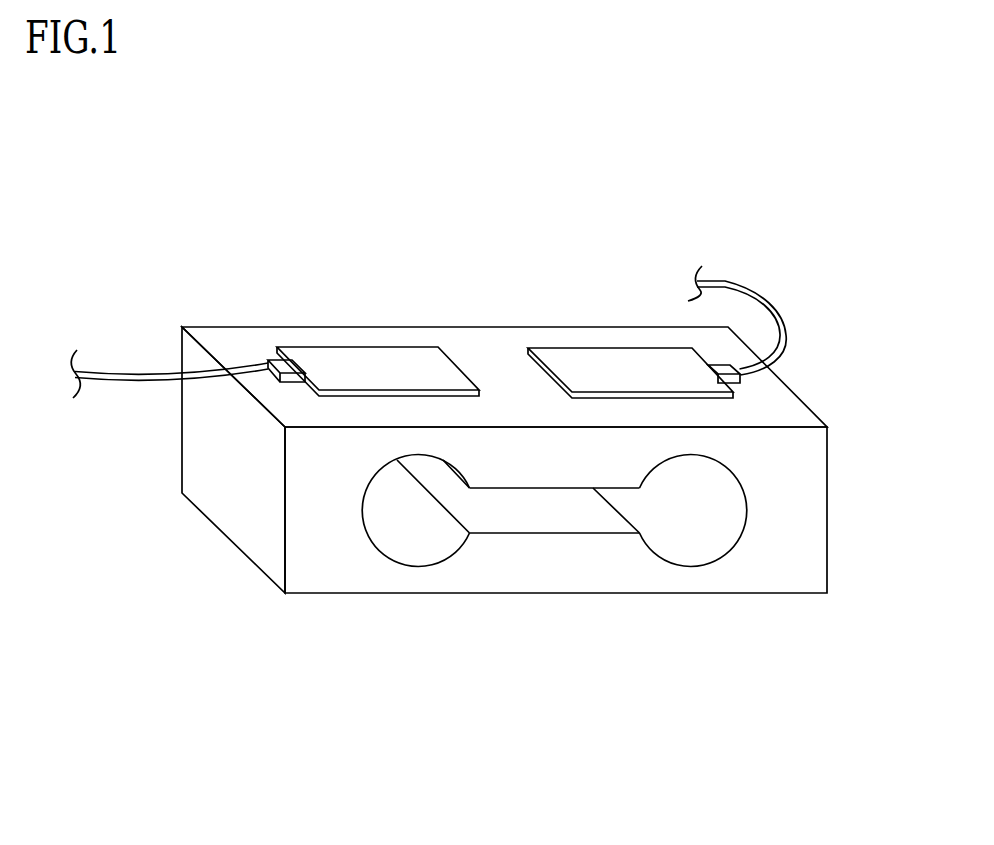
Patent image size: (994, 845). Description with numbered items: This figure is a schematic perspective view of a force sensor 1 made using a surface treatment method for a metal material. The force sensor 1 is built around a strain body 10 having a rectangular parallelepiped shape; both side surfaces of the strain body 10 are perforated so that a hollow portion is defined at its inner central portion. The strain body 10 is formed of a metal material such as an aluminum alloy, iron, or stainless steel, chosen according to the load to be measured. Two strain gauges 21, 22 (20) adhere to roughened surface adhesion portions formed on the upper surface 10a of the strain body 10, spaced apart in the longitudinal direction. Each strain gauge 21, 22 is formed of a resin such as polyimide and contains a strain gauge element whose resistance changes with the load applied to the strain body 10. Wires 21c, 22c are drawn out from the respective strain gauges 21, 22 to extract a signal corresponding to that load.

The force sensor 1 is at (440, 218).
The strain body 10 is at (335, 595).
The upper surface 10a is at (458, 342).
The strain gauges 20 is at (504, 307).
The strain gauge 21 is at (310, 347).
The strain gauge 22 is at (562, 347).
The wire 21c is at (148, 370).
The wire 22c is at (740, 292).